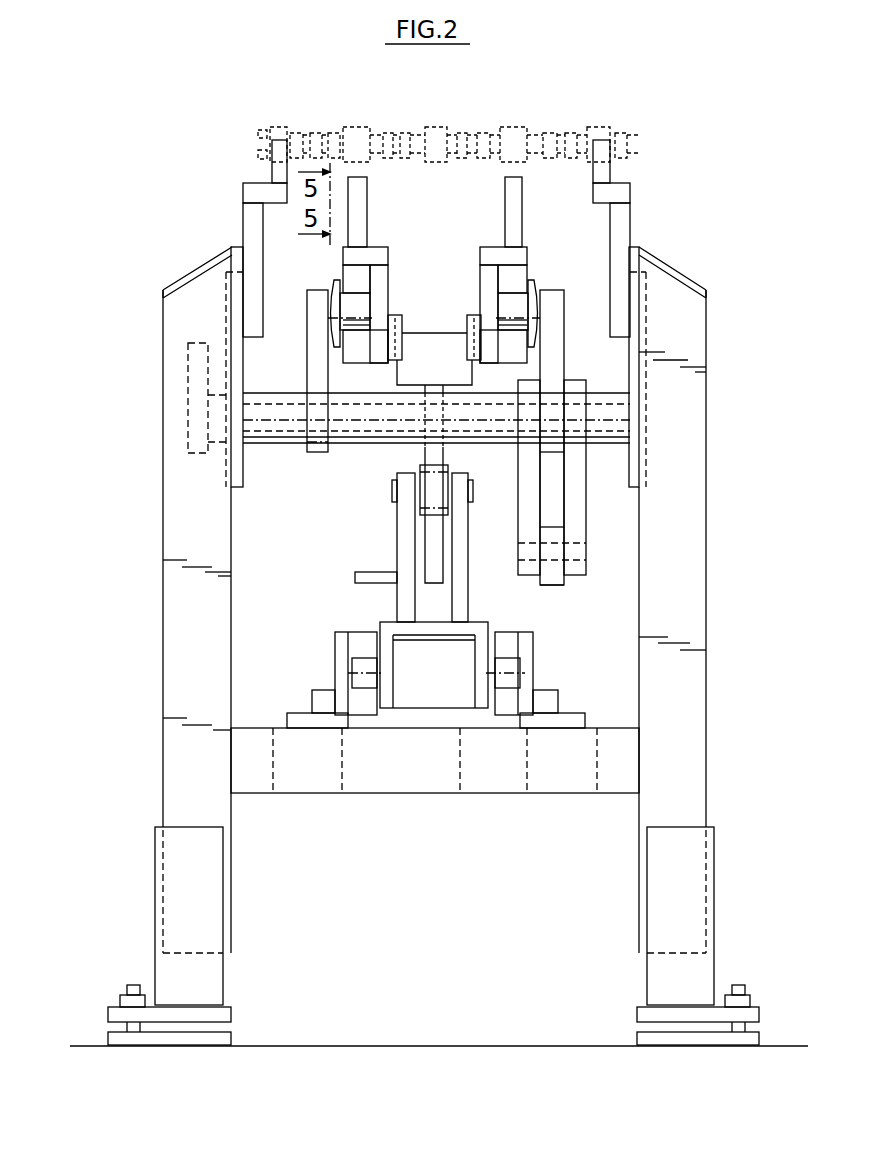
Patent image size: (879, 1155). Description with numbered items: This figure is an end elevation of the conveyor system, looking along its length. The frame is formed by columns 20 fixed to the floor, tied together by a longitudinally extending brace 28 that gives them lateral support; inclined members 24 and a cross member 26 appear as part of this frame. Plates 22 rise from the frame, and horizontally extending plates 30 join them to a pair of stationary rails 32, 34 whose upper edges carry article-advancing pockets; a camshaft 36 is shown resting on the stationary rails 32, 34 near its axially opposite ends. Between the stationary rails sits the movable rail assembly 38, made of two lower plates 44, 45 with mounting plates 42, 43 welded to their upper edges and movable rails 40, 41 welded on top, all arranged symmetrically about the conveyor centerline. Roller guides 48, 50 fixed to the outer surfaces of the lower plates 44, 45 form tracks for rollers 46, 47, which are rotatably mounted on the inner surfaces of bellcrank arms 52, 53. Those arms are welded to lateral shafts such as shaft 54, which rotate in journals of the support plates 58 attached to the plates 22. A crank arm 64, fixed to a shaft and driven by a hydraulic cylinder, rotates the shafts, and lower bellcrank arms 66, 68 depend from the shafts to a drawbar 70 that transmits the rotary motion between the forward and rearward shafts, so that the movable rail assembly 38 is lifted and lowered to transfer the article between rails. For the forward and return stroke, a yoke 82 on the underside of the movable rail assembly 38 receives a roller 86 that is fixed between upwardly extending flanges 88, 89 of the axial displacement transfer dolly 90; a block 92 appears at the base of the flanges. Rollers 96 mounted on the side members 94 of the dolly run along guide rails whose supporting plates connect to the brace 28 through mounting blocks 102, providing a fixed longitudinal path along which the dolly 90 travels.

The column 20 is at (170, 600).
The plate 22 is at (250, 236).
The inclined brace beam 24 is at (238, 305).
The cross member 26 is at (580, 741).
The longitudinally extending brace 28 is at (312, 782).
The horizontally extending plate 30 is at (250, 191).
The stationary rail 32 is at (284, 172).
The stationary rail 34 is at (607, 172).
The camshaft 36 is at (360, 126).
The movable rail assembly 38 is at (405, 447).
The movable rail 40 is at (367, 206).
The movable rail 41 is at (510, 208).
The mounting plate 42 is at (388, 256).
The mounting plate 43 is at (488, 255).
The lower plate 44 is at (383, 289).
The lower plate 45 is at (487, 278).
The roller 46 is at (348, 310).
The roller 47 is at (510, 308).
The roller guide 48 is at (356, 272).
The roller guide 50 is at (378, 367).
The bellcrank arm 52 is at (316, 362).
The bellcrank arm 53 is at (557, 352).
The shaft 54 is at (294, 438).
The support plate 58 is at (244, 478).
The crank arm 64 is at (190, 386).
The lower bellcrank arm 66 is at (528, 488).
The lower bellcrank arm 68 is at (577, 525).
The drawbar 70 is at (553, 580).
The yoke 82 is at (437, 450).
The roller 86 is at (448, 508).
The flange 88 is at (397, 548).
The flange 89 is at (462, 570).
The axial displacement transfer dolly 90 is at (538, 622).
The lower tool block 92 is at (482, 622).
The side member 94 is at (386, 648).
The roller 96 is at (367, 667).
The mounting block 102 is at (322, 694).